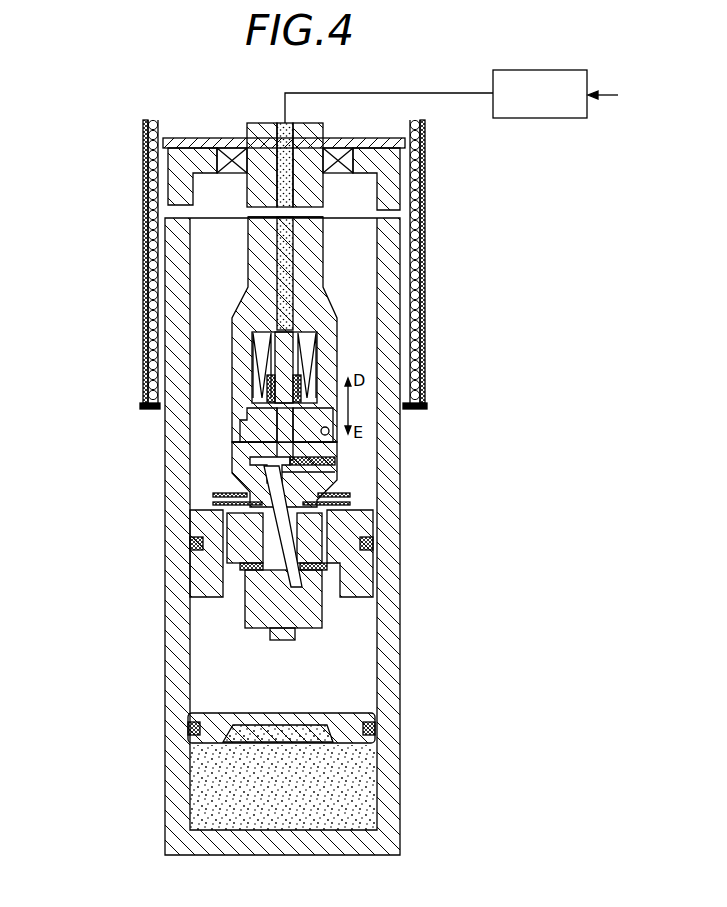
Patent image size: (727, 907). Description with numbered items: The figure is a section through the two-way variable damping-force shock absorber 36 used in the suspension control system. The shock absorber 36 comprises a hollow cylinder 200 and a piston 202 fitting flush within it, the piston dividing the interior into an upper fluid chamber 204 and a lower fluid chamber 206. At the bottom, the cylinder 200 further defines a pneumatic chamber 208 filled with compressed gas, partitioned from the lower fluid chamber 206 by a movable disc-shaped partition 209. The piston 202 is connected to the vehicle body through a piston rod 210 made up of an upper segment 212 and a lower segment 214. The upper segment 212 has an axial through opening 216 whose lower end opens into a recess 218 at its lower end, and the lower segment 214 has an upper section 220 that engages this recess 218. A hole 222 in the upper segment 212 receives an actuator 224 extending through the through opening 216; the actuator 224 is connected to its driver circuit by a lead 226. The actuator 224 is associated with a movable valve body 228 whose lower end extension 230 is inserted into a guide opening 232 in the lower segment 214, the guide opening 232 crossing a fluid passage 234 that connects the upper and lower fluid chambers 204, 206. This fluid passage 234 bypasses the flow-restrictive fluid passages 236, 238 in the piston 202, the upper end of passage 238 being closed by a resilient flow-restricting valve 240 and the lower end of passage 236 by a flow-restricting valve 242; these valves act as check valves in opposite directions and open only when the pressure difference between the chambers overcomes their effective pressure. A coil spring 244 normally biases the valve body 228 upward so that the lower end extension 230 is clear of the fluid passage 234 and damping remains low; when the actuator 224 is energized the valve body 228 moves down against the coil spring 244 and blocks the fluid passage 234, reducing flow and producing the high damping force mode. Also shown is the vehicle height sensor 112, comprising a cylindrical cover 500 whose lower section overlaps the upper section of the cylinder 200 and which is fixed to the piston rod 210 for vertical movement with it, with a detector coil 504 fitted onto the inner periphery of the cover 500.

The vehicle height sensor 112 is at (548, 70).
The variable damping-force shock absorber 36 is at (448, 421).
The hollow cylinder 200 is at (180, 478).
The piston 202 is at (358, 567).
The upper fluid chamber 204 is at (357, 262).
The lower fluid chamber 206 is at (358, 644).
The pneumatic chamber 208 is at (360, 788).
The movable disc-shaped partition 209 is at (347, 718).
The piston rod 210 is at (222, 308).
The upper segment 212 is at (252, 267).
The lower segment 214 is at (245, 470).
The axial through opening 216 is at (300, 182).
The recess 218 is at (388, 440).
The upper section 220 is at (283, 440).
The hole 222 is at (226, 595).
The actuator 224 is at (305, 340).
The lead 226 is at (275, 238).
The movable valve body 228 is at (305, 364).
The lower end extension 230 is at (290, 428).
The guide opening 232 is at (333, 447).
The fluid passage 234 is at (290, 470).
The flow-restrictive fluid passage 236 is at (198, 545).
The flow-restrictive fluid passage 238 is at (330, 528).
The resilient flow-restricting valve 240 is at (230, 497).
The flow-restricting valve 242 is at (328, 575).
The coil spring 244 is at (318, 400).
The cylindrical cover 500 is at (425, 230).
The detector coil 504 is at (421, 284).